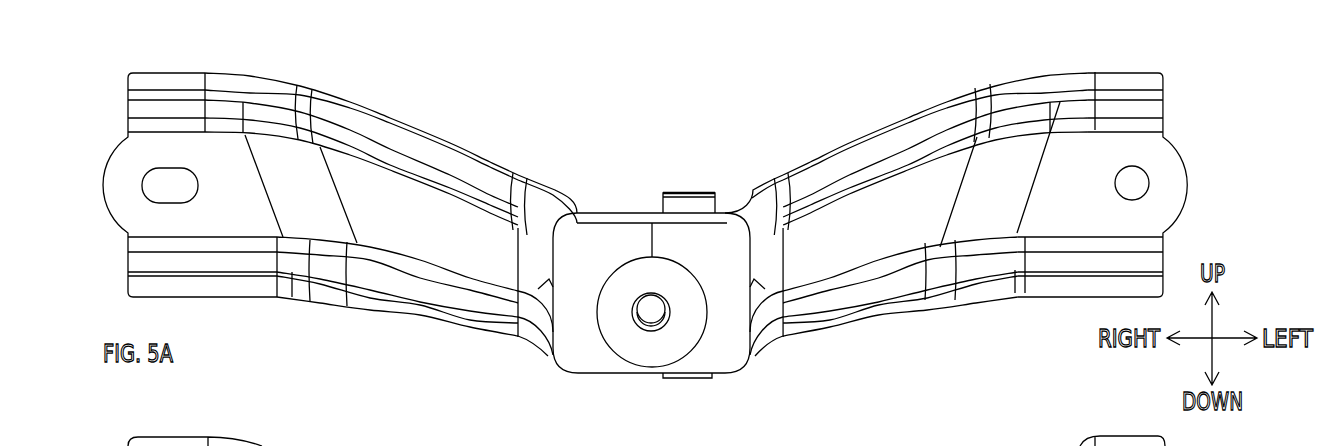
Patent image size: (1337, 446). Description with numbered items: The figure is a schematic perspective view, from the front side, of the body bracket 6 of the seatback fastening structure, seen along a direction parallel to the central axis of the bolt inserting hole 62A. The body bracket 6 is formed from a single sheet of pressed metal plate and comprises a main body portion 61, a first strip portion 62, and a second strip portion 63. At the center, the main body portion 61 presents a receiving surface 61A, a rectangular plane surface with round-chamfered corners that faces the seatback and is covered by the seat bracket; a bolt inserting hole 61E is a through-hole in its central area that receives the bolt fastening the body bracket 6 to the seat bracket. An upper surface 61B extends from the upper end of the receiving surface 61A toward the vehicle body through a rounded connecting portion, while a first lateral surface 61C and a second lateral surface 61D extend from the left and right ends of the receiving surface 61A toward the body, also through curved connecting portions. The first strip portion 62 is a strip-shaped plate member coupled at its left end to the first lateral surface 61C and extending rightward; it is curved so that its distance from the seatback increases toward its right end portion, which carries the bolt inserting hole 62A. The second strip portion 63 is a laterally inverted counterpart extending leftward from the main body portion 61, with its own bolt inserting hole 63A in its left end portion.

The body bracket 6 is at (766, 93).
The main body portion 61 is at (659, 269).
The receiving surface 61A is at (734, 350).
The upper surface 61B is at (614, 221).
The first lateral surface 61C is at (535, 342).
The second lateral surface 61D is at (781, 338).
The bolt inserting hole 61E is at (663, 324).
The first strip portion 62 is at (427, 153).
The bolt inserting hole 62A is at (147, 178).
The second strip portion 63 is at (1035, 82).
The bolt inserting hole 63A is at (1146, 179).